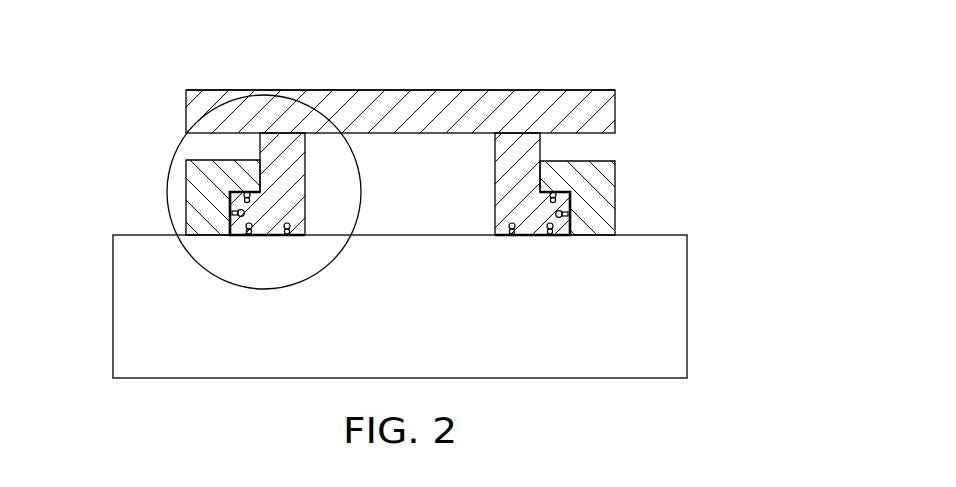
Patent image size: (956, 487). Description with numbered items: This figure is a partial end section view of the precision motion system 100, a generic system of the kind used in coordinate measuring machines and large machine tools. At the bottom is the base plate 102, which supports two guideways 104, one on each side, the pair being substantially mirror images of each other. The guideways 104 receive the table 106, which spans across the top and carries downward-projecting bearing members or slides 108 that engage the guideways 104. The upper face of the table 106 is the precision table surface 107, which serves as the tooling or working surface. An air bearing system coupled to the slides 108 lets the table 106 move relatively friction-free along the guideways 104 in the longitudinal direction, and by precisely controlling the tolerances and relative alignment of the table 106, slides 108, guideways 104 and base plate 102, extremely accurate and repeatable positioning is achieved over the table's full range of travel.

The motion system 100 is at (634, 66).
The base plate 102 is at (113, 306).
The guideway 104 is at (186, 191).
The table 106 is at (436, 90).
The precision table surface 107 is at (539, 89).
The slide 108 is at (495, 182).